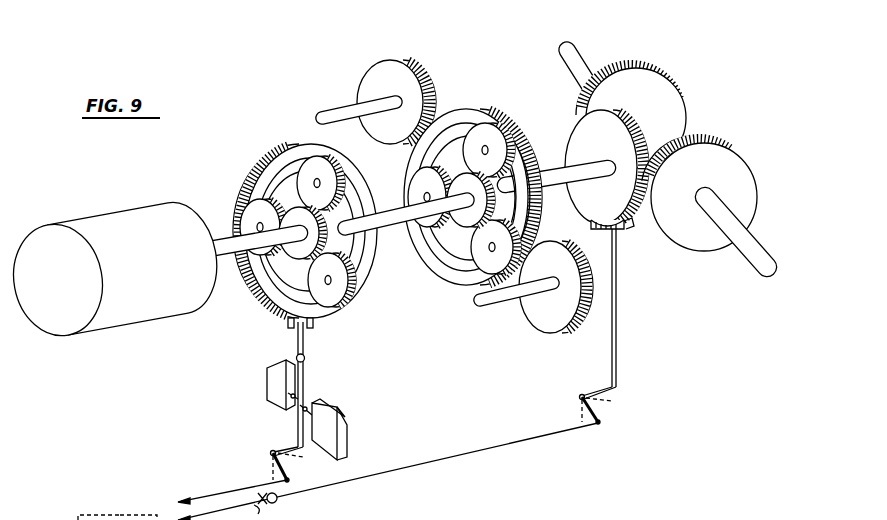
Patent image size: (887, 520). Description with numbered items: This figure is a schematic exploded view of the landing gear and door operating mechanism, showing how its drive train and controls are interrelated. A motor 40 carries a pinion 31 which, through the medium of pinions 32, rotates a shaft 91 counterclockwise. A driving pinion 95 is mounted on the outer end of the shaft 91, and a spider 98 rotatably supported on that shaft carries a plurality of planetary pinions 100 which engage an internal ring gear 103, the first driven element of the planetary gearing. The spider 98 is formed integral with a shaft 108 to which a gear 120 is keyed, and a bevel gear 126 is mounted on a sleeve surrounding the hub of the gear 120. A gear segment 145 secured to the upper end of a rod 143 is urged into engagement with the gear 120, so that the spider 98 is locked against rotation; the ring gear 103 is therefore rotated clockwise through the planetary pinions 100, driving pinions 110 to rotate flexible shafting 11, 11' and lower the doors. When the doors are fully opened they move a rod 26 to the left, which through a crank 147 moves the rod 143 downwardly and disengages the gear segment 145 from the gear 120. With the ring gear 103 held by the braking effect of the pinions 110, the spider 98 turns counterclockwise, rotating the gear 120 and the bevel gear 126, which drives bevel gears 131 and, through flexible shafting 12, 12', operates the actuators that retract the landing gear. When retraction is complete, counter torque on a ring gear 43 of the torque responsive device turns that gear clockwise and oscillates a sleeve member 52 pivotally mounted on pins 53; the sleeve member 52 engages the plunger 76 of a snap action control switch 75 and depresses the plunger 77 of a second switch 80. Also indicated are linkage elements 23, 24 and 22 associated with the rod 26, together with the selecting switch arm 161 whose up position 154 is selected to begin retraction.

The motor 40 is at (100, 325).
The ring gear 43 is at (257, 160).
The pinion 31 is at (253, 288).
The pinions 32 is at (346, 302).
The flexible shafting 11 is at (354, 91).
The flexible shafting 11' is at (508, 314).
The driving pinions 110 is at (410, 82).
The internal ring gear 103 is at (462, 116).
The planetary pinions 100 is at (486, 125).
The shaft 91 is at (383, 204).
The spider 98 is at (482, 200).
The driving pinion 95 is at (432, 262).
The shaft 108 is at (550, 176).
The gear 120 is at (594, 196).
The gear segment 145 is at (622, 230).
The rod 143 is at (618, 318).
The crank 147 is at (602, 422).
The bevel gear 126 is at (668, 152).
The bevel gears 131 is at (655, 88).
The flexible shafting 12 is at (587, 62).
The flexible shafting 12' is at (734, 242).
The sleeve member 52 is at (306, 392).
The pins 53 is at (306, 358).
The snap action control switch 75 is at (267, 372).
The plunger 76 is at (288, 397).
The plunger 77 is at (302, 423).
The snap action control switch 80 is at (341, 420).
The link 23 is at (237, 490).
The pivot 24 is at (278, 501).
The rod 26 is at (410, 468).
The cable 22 is at (251, 512).
The arm 161 is at (124, 507).
The up position 154 is at (152, 505).